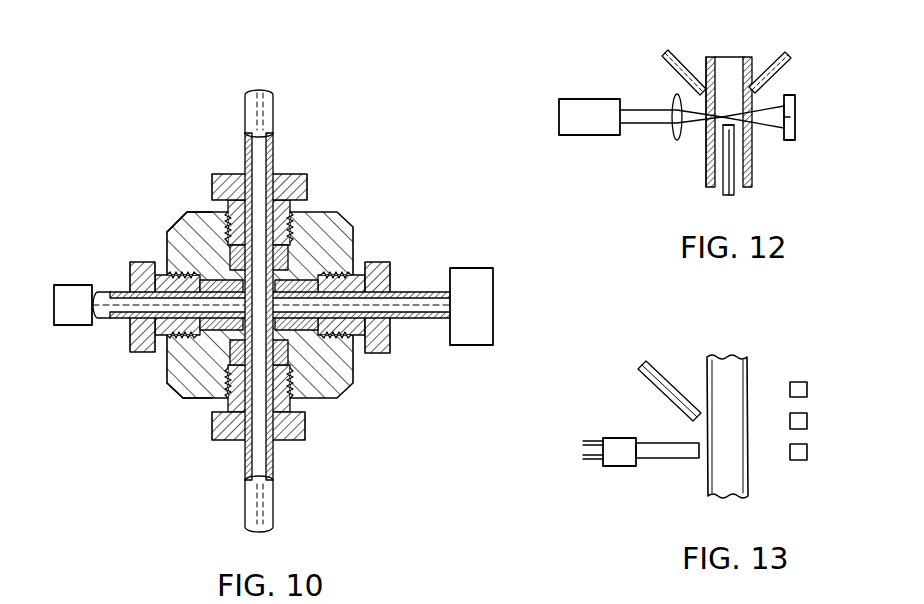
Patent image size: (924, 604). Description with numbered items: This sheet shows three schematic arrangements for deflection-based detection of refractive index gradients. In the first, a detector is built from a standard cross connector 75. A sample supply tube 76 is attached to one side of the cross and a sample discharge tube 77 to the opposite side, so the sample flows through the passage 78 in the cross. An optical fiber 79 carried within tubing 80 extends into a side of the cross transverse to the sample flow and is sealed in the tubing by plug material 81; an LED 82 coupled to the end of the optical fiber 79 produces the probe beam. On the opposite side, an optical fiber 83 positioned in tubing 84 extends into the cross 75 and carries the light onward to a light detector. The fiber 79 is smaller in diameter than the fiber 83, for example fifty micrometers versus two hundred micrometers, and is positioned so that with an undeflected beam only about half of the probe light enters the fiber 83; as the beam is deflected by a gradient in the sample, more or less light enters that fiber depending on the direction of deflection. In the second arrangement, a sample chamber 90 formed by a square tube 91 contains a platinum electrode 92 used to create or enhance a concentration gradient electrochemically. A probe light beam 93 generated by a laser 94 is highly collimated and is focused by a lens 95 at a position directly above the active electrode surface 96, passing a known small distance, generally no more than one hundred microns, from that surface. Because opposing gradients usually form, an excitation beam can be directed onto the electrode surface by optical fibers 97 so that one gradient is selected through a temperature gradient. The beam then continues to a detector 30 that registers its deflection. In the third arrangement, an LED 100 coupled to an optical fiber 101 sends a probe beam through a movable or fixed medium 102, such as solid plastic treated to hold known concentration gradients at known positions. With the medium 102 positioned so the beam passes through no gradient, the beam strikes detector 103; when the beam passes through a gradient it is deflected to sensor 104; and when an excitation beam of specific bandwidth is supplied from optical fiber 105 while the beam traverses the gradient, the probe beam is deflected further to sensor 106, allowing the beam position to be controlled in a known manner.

In FIG. 10, the cross connector 75 is at (345, 392).
In FIG. 10, the sample supply tube 76 is at (276, 118).
In FIG. 10, the sample discharge tube 77 is at (276, 500).
In FIG. 10, the passage 78 is at (185, 388).
In FIG. 10, the optical fiber 79 is at (118, 318).
In FIG. 10, the tubing 80 is at (102, 290).
In FIG. 10, the plug material 81 is at (182, 222).
In FIG. 10, the LED 82 is at (70, 288).
In FIG. 10, the optical fiber 83 is at (405, 296).
In FIG. 10, the tubing 84 is at (414, 321).
In FIG. 12, the sample chamber 90 is at (738, 65).
In FIG. 12, the square tube 91 is at (703, 58).
In FIG. 12, the platinum electrode 92 is at (730, 170).
In FIG. 12, the probe light beam 93 is at (770, 125).
In FIG. 12, the laser 94 is at (580, 98).
In FIG. 12, the lens 95 is at (672, 128).
In FIG. 12, the active electrode surface 96 is at (725, 132).
In FIG. 12, the optical fibers 97 is at (665, 68).
In FIG. 12, the detector 30 is at (797, 120).
In FIG. 13, the LED 100 is at (613, 467).
In FIG. 13, the optical fiber 101 is at (662, 458).
In FIG. 13, the medium 102 is at (752, 480).
In FIG. 13, the detector 103 is at (808, 450).
In FIG. 13, the sensor 104 is at (808, 421).
In FIG. 13, the optical fiber 105 is at (656, 380).
In FIG. 13, the sensor 106 is at (808, 388).